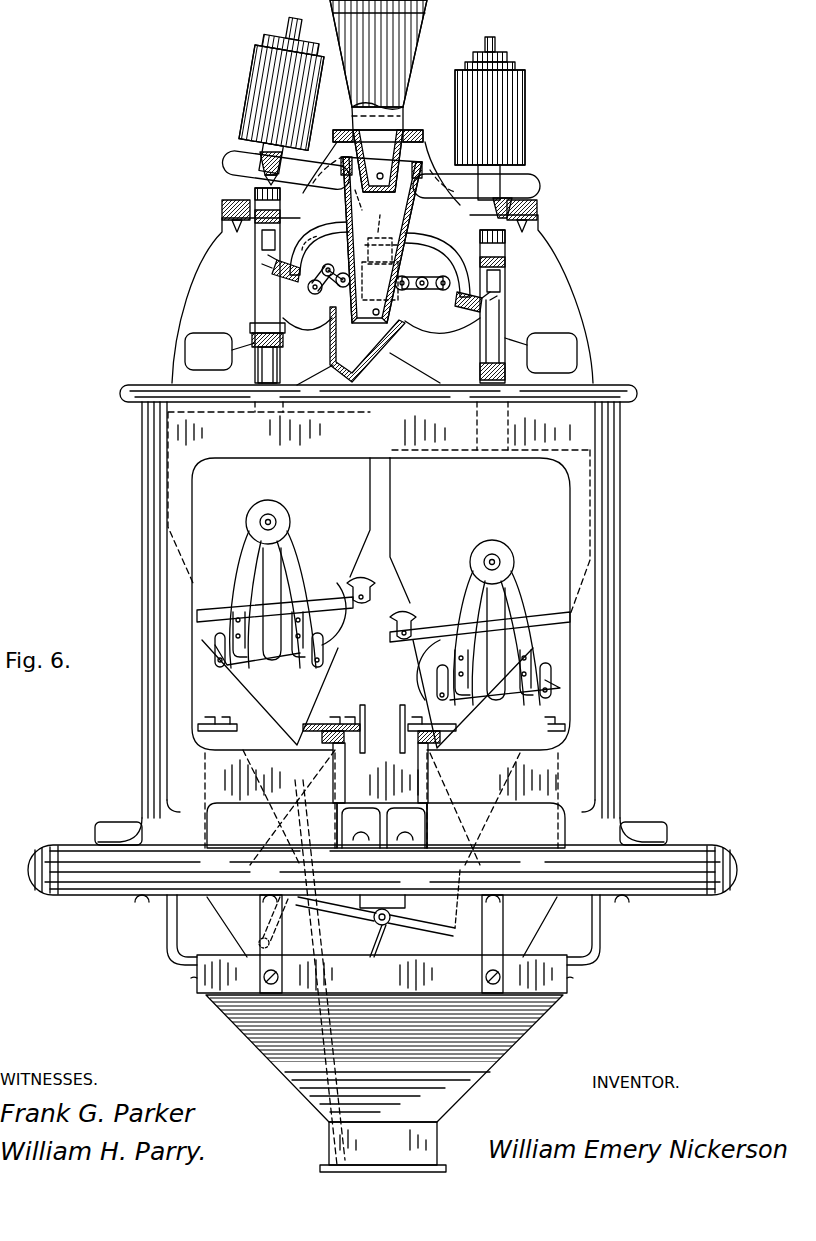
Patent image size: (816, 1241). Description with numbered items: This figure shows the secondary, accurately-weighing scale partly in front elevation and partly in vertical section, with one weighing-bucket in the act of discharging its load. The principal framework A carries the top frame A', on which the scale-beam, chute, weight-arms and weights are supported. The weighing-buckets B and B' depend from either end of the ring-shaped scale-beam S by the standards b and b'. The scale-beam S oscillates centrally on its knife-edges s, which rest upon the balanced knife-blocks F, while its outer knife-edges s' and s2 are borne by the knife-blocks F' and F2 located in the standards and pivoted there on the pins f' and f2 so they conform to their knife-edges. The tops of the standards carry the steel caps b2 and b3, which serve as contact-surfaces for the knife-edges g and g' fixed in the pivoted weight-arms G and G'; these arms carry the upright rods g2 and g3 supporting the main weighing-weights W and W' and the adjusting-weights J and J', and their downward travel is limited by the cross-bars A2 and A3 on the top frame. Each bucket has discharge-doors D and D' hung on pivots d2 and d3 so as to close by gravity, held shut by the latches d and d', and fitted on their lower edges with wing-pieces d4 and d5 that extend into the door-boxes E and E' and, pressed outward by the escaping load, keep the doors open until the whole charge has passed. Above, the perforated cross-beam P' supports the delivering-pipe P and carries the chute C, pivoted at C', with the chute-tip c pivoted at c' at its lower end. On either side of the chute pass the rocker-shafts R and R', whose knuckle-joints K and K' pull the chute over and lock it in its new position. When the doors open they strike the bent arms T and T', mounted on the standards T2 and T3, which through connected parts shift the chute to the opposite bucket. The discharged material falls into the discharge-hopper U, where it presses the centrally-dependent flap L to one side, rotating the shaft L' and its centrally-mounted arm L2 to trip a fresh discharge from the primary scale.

The principal framework A is at (381, 615).
The top frame A' is at (382, 263).
The cross-bar A2 is at (535, 217).
The cross-bar A3 is at (222, 212).
The weighing-bucket B is at (480, 604).
The weighing-bucket B' is at (291, 604).
The chute C is at (372, 240).
The chute pivot C' is at (378, 161).
The chute-tip c is at (367, 344).
The chute-tip pivot c' is at (370, 302).
The discharge-doors D is at (516, 659).
The discharge-doors D' is at (238, 638).
The latches d is at (405, 658).
The latches d' is at (365, 624).
The door pivots d2 is at (502, 560).
The door pivots d3 is at (278, 520).
The wing-pieces d4 is at (496, 809).
The wing-pieces d5 is at (275, 957).
The door-box E is at (382, 919).
The door-box E' is at (224, 944).
The balanced knife-blocks F is at (384, 272).
The knife-block F' is at (516, 290).
The knife-block F2 is at (272, 270).
The pin f' is at (504, 273).
The pin f2 is at (276, 234).
The weight-arm G is at (487, 182).
The weight-arm G' is at (281, 162).
The knife-edge g is at (528, 207).
The knife-edge g' is at (243, 168).
The upright rod g2 is at (495, 44).
The upright rod g3 is at (295, 18).
The adjusting-weights J is at (486, 56).
The adjusting-weights J' is at (268, 35).
The knuckle-joint K is at (422, 294).
The knuckle-joint K' is at (327, 265).
The centrally-dependent flap L is at (382, 880).
The shaft L' is at (317, 923).
The centrally-mounted arm L2 is at (424, 909).
The delivering-pipe P is at (381, 65).
The perforated cross-beam P' is at (389, 140).
The rocker-shaft R is at (422, 295).
The rocker-shaft R' is at (319, 282).
The ring-shaped scale-beam S is at (445, 236).
The knife-edges s is at (373, 227).
The knife-edge s' is at (509, 294).
The knife-edge s2 is at (262, 265).
The bent arms T is at (470, 732).
The bent arms T' is at (279, 740).
The standards T2 is at (428, 817).
The standards T3 is at (345, 817).
The discharge-hopper U is at (384, 1083).
The main weighing-weight W is at (506, 135).
The main weighing-weight W' is at (264, 111).
The standard b is at (480, 306).
The standard b' is at (257, 285).
The steel cap b2 is at (505, 237).
The steel cap b3 is at (255, 194).